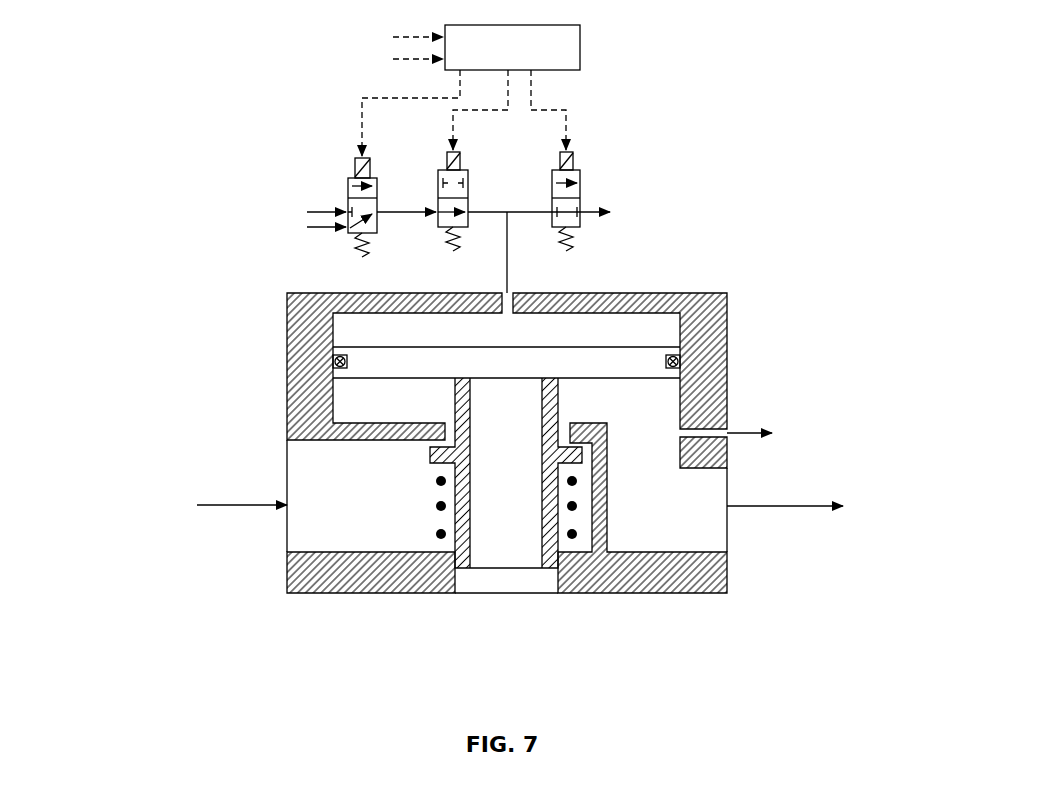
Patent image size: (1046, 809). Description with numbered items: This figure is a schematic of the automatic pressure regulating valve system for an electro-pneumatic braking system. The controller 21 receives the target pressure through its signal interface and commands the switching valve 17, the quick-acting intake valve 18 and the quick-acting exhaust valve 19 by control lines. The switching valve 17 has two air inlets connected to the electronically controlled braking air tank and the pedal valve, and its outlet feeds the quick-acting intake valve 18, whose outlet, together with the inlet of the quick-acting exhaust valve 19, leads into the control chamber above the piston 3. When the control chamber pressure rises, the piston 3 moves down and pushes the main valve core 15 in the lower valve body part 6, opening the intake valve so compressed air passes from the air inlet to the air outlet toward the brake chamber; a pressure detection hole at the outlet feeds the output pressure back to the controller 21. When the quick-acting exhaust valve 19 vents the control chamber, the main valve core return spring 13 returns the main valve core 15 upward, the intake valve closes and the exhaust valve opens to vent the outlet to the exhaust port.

The piston 3 is at (457, 362).
The lower valve body part 6 is at (413, 568).
The main valve core return spring 13 is at (575, 480).
The main valve core 15 is at (560, 398).
The switching valve 17 is at (372, 185).
The quick-acting intake valve 18 is at (448, 221).
The quick-acting exhaust valve 19 is at (578, 218).
The controller 21 is at (560, 47).